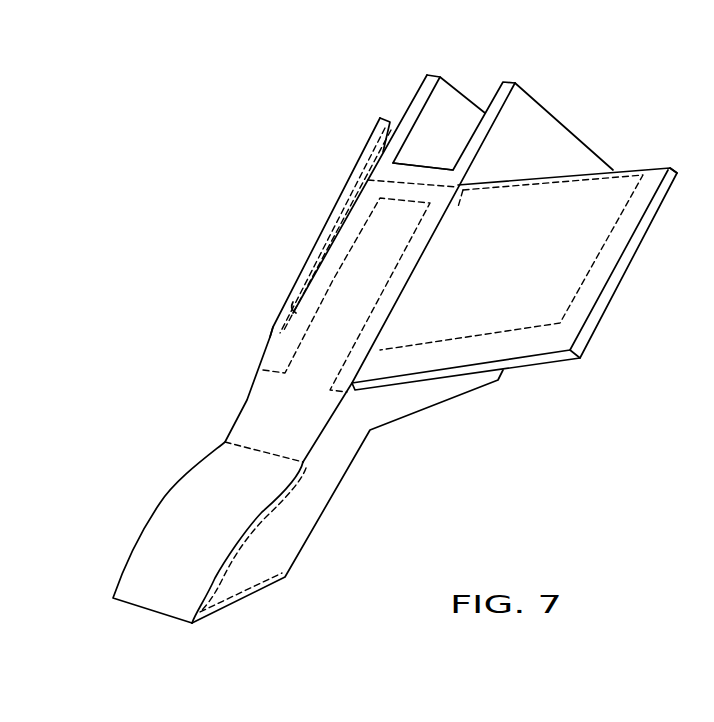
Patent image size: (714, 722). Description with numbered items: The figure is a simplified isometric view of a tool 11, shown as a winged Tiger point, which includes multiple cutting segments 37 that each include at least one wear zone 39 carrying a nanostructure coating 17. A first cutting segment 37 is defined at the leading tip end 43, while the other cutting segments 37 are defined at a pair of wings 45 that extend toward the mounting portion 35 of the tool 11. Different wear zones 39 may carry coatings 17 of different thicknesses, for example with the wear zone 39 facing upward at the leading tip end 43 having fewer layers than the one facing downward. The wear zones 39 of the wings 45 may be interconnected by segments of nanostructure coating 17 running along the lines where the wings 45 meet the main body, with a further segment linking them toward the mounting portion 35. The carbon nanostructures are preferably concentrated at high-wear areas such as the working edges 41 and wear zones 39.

The tool 11 is at (175, 226).
The nanostructure coating 17 is at (356, 164).
The mounting portion 35 is at (413, 79).
The cutting segment 37 is at (268, 327).
The wear zone 39 is at (340, 193).
The working edge 41 is at (327, 223).
The leading tip end 43 is at (303, 585).
The wing 45 is at (271, 289).